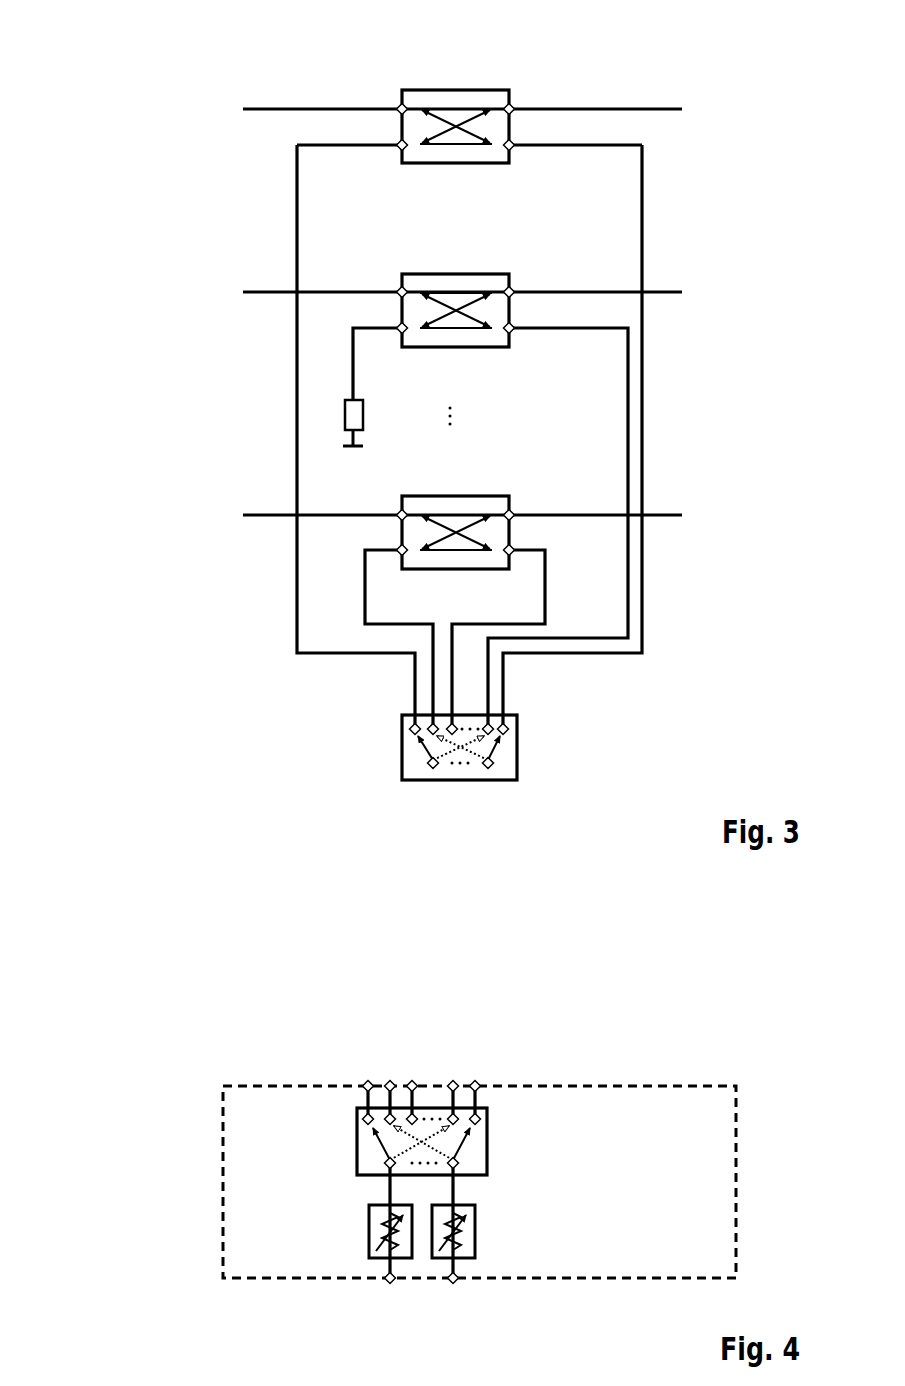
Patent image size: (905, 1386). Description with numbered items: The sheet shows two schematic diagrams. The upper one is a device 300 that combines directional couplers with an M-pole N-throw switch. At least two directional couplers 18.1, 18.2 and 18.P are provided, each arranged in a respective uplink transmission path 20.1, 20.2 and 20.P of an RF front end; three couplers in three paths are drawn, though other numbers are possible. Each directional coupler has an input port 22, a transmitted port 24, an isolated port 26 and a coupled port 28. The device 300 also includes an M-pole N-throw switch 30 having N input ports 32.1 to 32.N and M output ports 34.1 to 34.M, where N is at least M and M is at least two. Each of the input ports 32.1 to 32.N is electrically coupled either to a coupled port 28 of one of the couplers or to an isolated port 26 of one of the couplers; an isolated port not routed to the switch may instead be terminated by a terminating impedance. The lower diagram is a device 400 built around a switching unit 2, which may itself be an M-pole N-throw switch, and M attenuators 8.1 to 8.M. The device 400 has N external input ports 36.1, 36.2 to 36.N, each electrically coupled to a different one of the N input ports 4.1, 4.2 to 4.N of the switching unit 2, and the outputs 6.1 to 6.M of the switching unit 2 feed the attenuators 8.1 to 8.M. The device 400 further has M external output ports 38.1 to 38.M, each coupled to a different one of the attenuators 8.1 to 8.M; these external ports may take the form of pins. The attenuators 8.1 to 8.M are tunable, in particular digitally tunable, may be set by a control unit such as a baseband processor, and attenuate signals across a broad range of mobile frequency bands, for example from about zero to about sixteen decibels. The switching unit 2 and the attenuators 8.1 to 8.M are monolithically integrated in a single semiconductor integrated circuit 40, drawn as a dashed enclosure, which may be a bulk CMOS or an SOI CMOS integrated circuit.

In FIG. 3, the device 300 is at (148, 42).
In FIG. 3, the uplink transmission path 20.1 is at (285, 108).
In FIG. 3, the uplink transmission path 20.2 is at (259, 290).
In FIG. 3, the uplink transmission path 20.P is at (265, 512).
In FIG. 3, the directional coupler 18.1 is at (464, 111).
In FIG. 3, the directional coupler 18.2 is at (472, 274).
In FIG. 3, the directional coupler 18.P is at (470, 497).
In FIG. 3, the input port 22 is at (400, 107).
In FIG. 3, the transmitted port 24 is at (512, 108).
In FIG. 3, the isolated port 26 is at (400, 147).
In FIG. 3, the coupled port 28 is at (512, 147).
In FIG. 3, the M-pole N-throw switch 30 is at (466, 752).
In FIG. 3, the input port 32.1 is at (412, 727).
In FIG. 3, the input port 32.N is at (507, 727).
In FIG. 3, the output port 34.1 is at (430, 768).
In FIG. 3, the output port 34.M is at (491, 768).
In FIG. 4, the device 400 is at (158, 1050).
In FIG. 4, the single semiconductor integrated circuit 40 is at (737, 1160).
In FIG. 4, the switching unit 2 is at (435, 1119).
In FIG. 4, the input port 4.1 is at (366, 1117).
In FIG. 4, the input port 4.2 is at (390, 1114).
In FIG. 4, the input port 4.N is at (478, 1117).
In FIG. 4, the output of switching unit 6.1 is at (388, 1166).
In FIG. 4, the output of switching unit 6.M is at (458, 1166).
In FIG. 4, the input port 36.1 is at (368, 1082).
In FIG. 4, the input port 36.2 is at (395, 1085).
In FIG. 4, the input port 36.N is at (478, 1085).
In FIG. 4, the attenuator 8.1 is at (368, 1238).
In FIG. 4, the attenuator 8.M is at (478, 1238).
In FIG. 4, the output port 38.1 is at (390, 1284).
In FIG. 4, the output port 38.M is at (453, 1284).